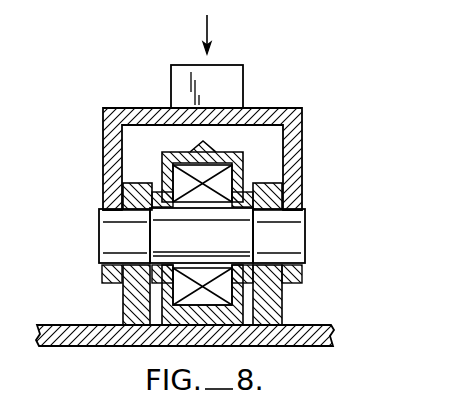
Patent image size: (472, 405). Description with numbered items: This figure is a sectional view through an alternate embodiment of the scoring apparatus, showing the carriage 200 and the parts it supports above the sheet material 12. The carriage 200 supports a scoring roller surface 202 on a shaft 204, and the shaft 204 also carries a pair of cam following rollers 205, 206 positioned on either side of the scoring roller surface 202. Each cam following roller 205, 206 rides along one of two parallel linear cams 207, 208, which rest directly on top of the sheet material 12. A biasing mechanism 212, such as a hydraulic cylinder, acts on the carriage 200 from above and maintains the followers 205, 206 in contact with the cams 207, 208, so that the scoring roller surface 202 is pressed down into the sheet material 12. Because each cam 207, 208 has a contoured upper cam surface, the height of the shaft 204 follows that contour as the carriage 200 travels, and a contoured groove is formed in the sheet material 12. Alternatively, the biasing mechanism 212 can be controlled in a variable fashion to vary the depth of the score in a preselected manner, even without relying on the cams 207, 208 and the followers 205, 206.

The sheet material 12 is at (293, 348).
The carriage 200 is at (290, 170).
The scoring roller surface 202 is at (240, 318).
The shaft 204 is at (287, 233).
The cam following roller 205 is at (270, 198).
The cam following roller 206 is at (137, 194).
The linear cam 207 is at (273, 298).
The linear cam 208 is at (130, 312).
The biasing mechanism 212 is at (235, 82).